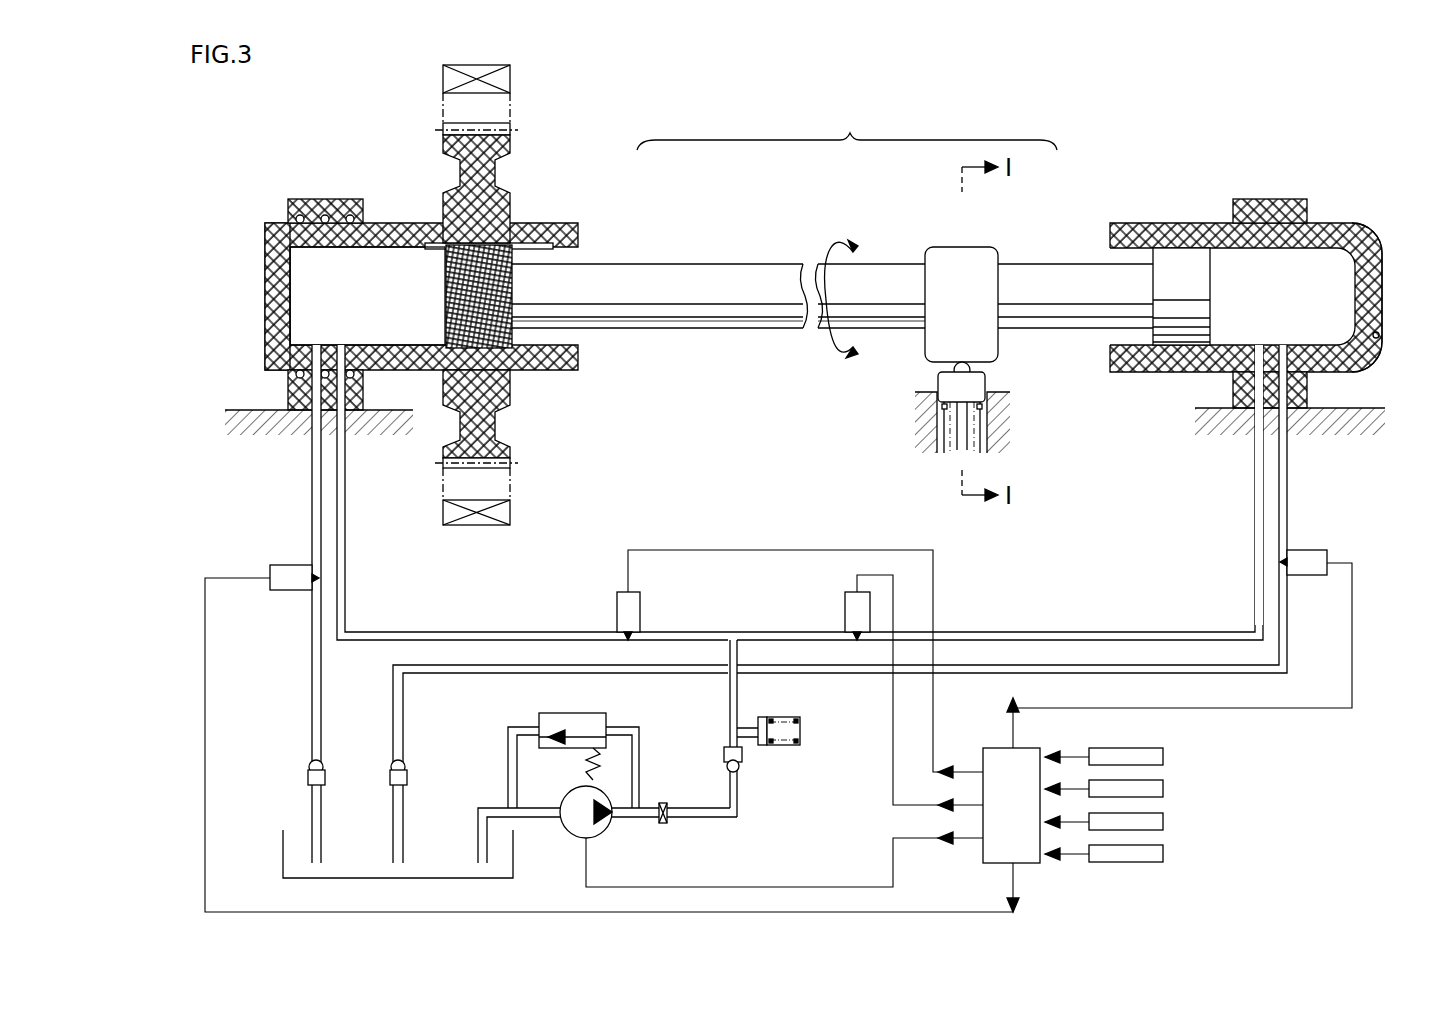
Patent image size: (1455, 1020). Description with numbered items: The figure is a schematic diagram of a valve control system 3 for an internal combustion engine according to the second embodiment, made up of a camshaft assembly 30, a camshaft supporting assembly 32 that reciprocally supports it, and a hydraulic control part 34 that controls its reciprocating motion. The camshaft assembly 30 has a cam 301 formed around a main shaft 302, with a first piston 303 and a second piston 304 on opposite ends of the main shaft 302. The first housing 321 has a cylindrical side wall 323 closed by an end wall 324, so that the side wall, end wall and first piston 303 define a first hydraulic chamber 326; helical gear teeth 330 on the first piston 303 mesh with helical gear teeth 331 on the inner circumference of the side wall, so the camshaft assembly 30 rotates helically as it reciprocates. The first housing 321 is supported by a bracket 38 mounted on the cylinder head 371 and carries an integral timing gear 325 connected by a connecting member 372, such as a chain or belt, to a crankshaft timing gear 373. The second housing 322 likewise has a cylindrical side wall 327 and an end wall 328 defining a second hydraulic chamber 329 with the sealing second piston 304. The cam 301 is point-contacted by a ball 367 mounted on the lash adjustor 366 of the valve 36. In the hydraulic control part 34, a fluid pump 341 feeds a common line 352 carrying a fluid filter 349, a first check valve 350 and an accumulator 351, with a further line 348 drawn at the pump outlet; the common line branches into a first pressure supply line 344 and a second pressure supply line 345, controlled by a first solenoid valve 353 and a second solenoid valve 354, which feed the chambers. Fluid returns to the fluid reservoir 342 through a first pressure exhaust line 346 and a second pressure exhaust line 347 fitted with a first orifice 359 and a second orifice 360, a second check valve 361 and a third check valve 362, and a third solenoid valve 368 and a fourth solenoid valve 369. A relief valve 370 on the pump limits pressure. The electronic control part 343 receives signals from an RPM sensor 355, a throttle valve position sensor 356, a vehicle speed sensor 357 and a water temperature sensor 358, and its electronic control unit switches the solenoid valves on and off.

The valve control system 3 is at (1393, 225).
The camshaft assembly 30 is at (686, 262).
The cam 301 is at (958, 254).
The main shaft 302 is at (679, 330).
The first piston 303 is at (446, 309).
The second piston 304 is at (1205, 280).
The camshaft supporting assembly 32 is at (847, 126).
The first housing 321 is at (578, 217).
The second housing 322 is at (1115, 220).
The cylindrical side wall 323 is at (393, 230).
The end wall 324 is at (270, 290).
The timing gear 325 is at (505, 145).
The first hydraulic chamber 326 is at (297, 320).
The cylindrical side wall 327 is at (1196, 228).
The end wall 328 is at (1380, 300).
The second hydraulic chamber 329 is at (1350, 333).
The helical gear teeth 330 is at (512, 283).
The helical gear teeth 331 is at (437, 240).
The hydraulic control part 34 is at (1085, 578).
The fluid pump 341 is at (572, 832).
The fluid reservoir 342 is at (405, 880).
The electronic control part 343 is at (1068, 866).
The first pressure supply line 344 is at (345, 620).
The second pressure supply line 345 is at (1255, 618).
The first pressure exhaust line 346 is at (312, 622).
The second pressure exhaust line 347 is at (1287, 640).
The supply conduit 348 is at (740, 812).
The fluid filter 349 is at (662, 825).
The first check valve 350 is at (745, 766).
The accumulator 351 is at (800, 740).
The common line 352 is at (700, 808).
The first solenoid valve 353 is at (617, 612).
The second solenoid valve 354 is at (845, 612).
The RPM sensor 355 is at (1163, 758).
The throttle valve position sensor 356 is at (1163, 790).
The vehicle speed sensor 357 is at (1163, 823).
The water temperature sensor 358 is at (1163, 855).
The first orifice 359 is at (307, 760).
The second orifice 360 is at (405, 760).
The second check valve 361 is at (307, 789).
The third check valve 362 is at (410, 790).
The lash adjustor 366 is at (947, 393).
The ball 367 is at (955, 371).
The valve 36 is at (980, 412).
The third solenoid valve 368 is at (279, 565).
The fourth solenoid valve 369 is at (1311, 550).
The relief valve 370 is at (612, 722).
The cylinder head 371 is at (250, 432).
The connecting member 372 is at (512, 472).
The crankshaft timing gear 373 is at (512, 512).
The bracket 38 is at (320, 208).